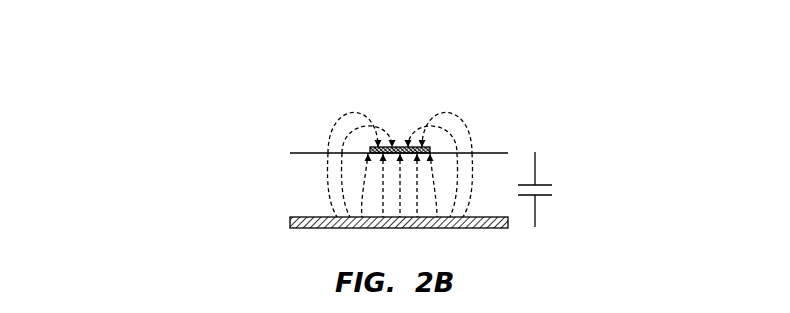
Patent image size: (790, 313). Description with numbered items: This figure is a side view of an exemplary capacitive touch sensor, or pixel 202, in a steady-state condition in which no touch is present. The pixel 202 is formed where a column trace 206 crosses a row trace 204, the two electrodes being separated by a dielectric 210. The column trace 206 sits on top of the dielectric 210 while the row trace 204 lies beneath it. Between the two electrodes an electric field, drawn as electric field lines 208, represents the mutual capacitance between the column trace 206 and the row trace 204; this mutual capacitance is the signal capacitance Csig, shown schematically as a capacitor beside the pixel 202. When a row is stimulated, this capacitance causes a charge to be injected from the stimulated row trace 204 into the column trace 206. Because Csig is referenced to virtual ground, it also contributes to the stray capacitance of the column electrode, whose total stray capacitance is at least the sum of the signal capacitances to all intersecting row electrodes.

The pixel 202 is at (522, 130).
The row trace 204 is at (300, 216).
The column trace 206 is at (402, 146).
The electric field lines 208 is at (436, 110).
The dielectric 210 is at (326, 134).